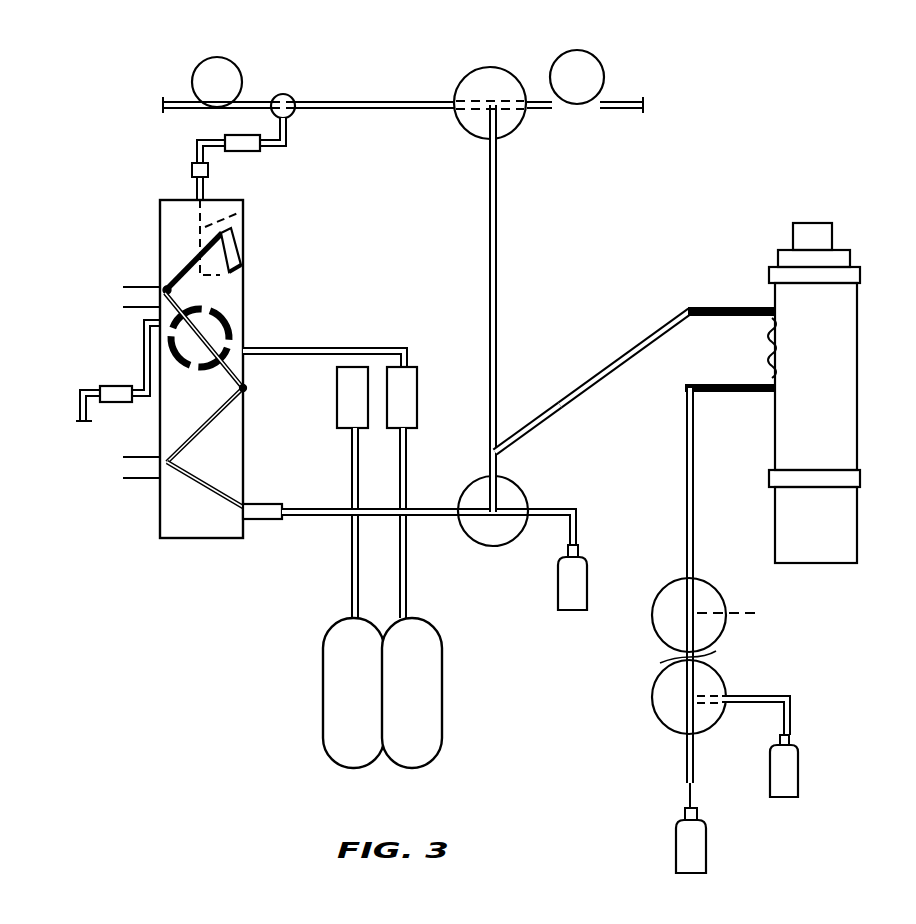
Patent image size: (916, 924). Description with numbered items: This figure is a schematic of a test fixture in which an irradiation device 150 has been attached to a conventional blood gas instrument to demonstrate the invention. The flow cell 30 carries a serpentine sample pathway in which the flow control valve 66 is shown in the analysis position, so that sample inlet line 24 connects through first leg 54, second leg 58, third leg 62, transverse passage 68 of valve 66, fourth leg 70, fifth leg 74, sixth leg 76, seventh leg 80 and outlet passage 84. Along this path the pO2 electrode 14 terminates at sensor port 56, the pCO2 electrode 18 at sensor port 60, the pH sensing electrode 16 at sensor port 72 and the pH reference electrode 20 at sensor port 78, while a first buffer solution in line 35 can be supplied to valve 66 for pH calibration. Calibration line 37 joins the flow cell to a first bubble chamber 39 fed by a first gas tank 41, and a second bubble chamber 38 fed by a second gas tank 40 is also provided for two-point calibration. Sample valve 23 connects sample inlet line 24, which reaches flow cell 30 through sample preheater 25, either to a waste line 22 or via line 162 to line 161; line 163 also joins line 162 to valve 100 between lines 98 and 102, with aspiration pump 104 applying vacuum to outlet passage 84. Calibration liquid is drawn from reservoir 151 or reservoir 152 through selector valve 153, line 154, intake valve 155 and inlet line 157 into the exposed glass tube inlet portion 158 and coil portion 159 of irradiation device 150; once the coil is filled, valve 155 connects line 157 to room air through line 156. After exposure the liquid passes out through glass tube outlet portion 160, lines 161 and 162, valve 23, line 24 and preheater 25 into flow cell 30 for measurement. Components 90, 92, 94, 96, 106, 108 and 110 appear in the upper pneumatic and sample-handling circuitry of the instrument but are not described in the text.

The pO2 electrode 14 is at (124, 478).
The pH sensing electrode 16 is at (124, 304).
The pCO2 electrode 18 is at (264, 392).
The pH reference electrode 20 is at (242, 250).
The line to waste 22 is at (578, 540).
The sample valve 23 is at (522, 498).
The sample inlet line 24 is at (432, 508).
The sample preheater 25 is at (266, 521).
The flow cell 30 is at (158, 219).
The first buffer solution line 35 is at (120, 383).
The calibration line 37 is at (342, 351).
The second bubble chamber 38 is at (337, 406).
The first bubble chamber 39 is at (417, 398).
The second gas tank 40 is at (324, 724).
The first gas tank 41 is at (436, 724).
The first leg 54 is at (178, 490).
The sensor port 56 is at (160, 460).
The second leg 58 is at (210, 441).
The sensor port 60 is at (212, 406).
The third leg 62 is at (250, 372).
The flow control valve 66 is at (248, 338).
The transverse passage 68 is at (212, 362).
The fourth leg 70 is at (146, 308).
The sensor port 72 is at (158, 286).
The fifth leg 74 is at (176, 266).
The sixth leg 76 is at (245, 230).
The sensor port 78 is at (258, 260).
The seventh leg 80 is at (241, 290).
The outlet passage 84 is at (240, 234).
The gas supply line 90 is at (198, 146).
The filter 92 is at (248, 148).
The regulator 94 is at (290, 140).
The valve 96 is at (284, 90).
The line 98 is at (320, 100).
The valve 100 is at (506, 136).
The line 102 is at (536, 108).
The aspiration pump 104 is at (600, 67).
The outlet conduit 106 is at (613, 108).
The pump 108 is at (227, 64).
The inlet conduit 110 is at (170, 96).
The irradiation device 150 is at (852, 364).
The reservoir of calibration liquid 151 is at (684, 848).
The reservoir of calibration liquid 152 is at (796, 768).
The selector valve 153 is at (742, 686).
The inlet line 154 is at (715, 654).
The intake valve 155 is at (711, 602).
The room air line 156 is at (750, 612).
The inlet line 157 is at (696, 494).
The glass tube inlet portion 158 is at (762, 394).
The coil portion 159 is at (768, 346).
The glass tube outlet portion 160 is at (718, 306).
The line 161 is at (624, 337).
The line 162 is at (498, 458).
The line 163 is at (500, 358).